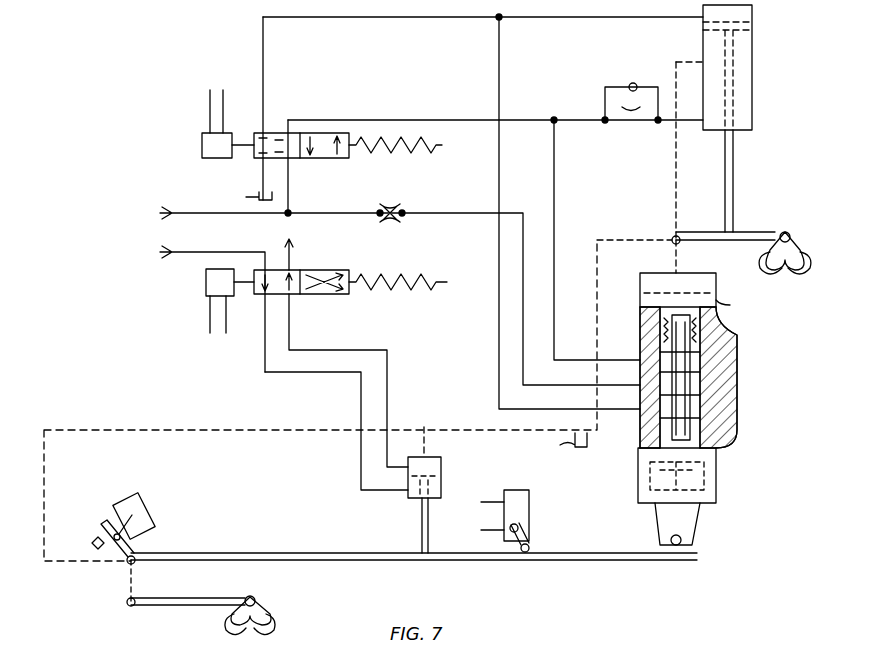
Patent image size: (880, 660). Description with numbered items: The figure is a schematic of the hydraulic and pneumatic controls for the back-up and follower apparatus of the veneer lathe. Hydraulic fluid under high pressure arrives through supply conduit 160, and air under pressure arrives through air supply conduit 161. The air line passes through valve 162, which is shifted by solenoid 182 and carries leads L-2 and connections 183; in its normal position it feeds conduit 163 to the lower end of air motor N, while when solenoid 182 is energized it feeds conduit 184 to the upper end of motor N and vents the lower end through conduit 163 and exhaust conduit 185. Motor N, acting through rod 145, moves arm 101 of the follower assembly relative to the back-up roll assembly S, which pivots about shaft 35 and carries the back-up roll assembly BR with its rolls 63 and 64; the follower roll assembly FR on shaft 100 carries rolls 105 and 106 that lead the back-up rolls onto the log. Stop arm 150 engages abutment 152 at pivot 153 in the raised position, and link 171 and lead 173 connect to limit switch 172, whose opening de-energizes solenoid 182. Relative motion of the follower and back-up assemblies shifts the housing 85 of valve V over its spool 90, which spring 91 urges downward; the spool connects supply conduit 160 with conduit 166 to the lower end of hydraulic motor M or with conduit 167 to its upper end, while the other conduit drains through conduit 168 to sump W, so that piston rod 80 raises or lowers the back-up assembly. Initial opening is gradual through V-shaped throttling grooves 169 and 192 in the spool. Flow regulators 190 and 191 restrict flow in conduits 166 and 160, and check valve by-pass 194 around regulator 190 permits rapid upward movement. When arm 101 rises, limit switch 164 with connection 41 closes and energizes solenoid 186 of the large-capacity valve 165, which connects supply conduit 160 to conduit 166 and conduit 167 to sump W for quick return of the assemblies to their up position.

The shaft 35 is at (672, 238).
The connection line 41 is at (490, 530).
The back-up roll 63 is at (775, 275).
The back-up roll 64 is at (798, 275).
The piston rod 80 is at (735, 170).
The valve housing 85 is at (716, 295).
The valve spool 90 is at (680, 430).
The spring 91 is at (700, 320).
The shaft 100 is at (180, 625).
The arm 101 is at (626, 566).
The follower roll 105 is at (224, 632).
The follower roll 106 is at (274, 632).
The rod 145 is at (420, 527).
The stop arm 150 is at (108, 522).
The abutment 152 is at (112, 535).
The pivot 153 is at (95, 548).
The hydraulic supply conduit 160 is at (240, 227).
The air supply conduit 161 is at (244, 256).
The air valve 162 is at (343, 296).
The conduit 163 is at (340, 374).
The limit switch 164 is at (529, 512).
The hydraulic valve 165 is at (318, 160).
The conduit 166 is at (554, 195).
The conduit 167 is at (499, 62).
The conduit 168 is at (606, 446).
The V-shaped throttling grooves 169 is at (210, 104).
The link 171 is at (112, 502).
The limit switch 172 is at (150, 500).
The lead 173 is at (127, 495).
The solenoid 182 is at (206, 282).
The lead 183 is at (226, 330).
The conduit 184 is at (362, 356).
The exhaust conduit 185 is at (291, 255).
The solenoid 186 is at (219, 165).
The flow regulator 190 is at (625, 128).
The flow regulator 191 is at (388, 222).
The V-shaped grooves 192 is at (672, 365).
The check valve by-pass 194 is at (638, 74).
The electrical lead L-2 is at (223, 96).
The hydraulic motor M is at (754, 90).
The sump W is at (406, 327).
The back-up roll assembly S is at (740, 252).
The back-up roll assembly BR is at (795, 232).
The hydraulic valve V is at (718, 478).
The air motor N is at (417, 454).
The follower roll assembly FR is at (258, 598).